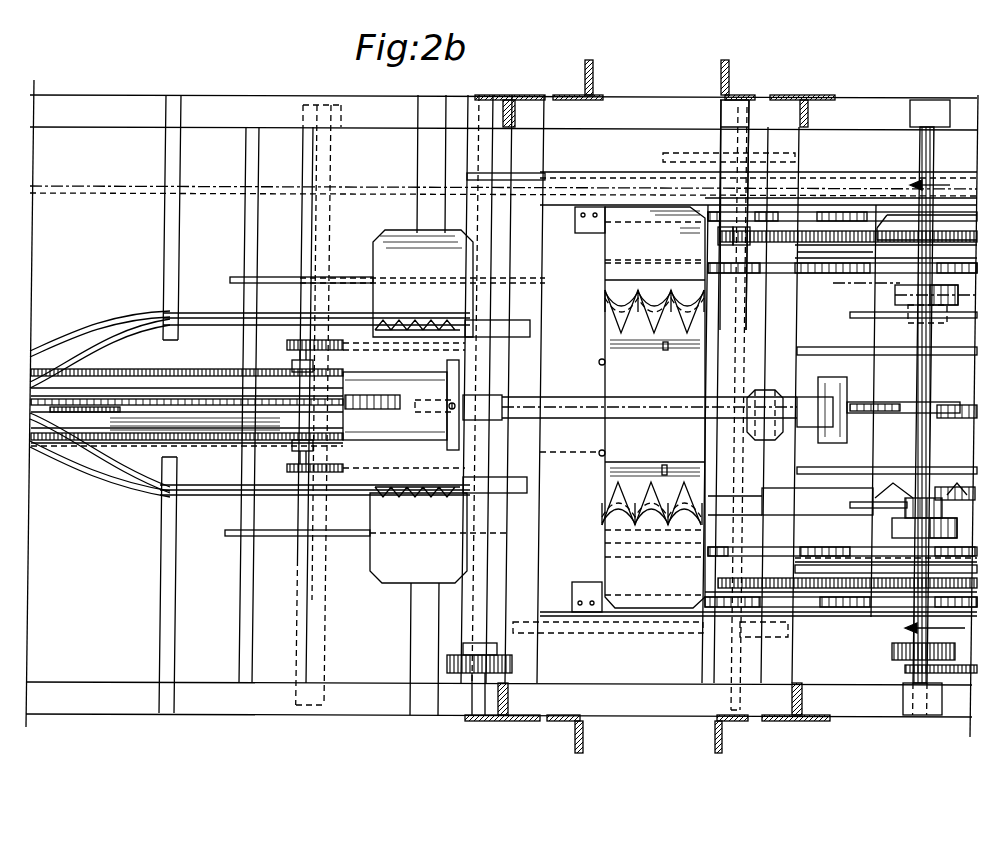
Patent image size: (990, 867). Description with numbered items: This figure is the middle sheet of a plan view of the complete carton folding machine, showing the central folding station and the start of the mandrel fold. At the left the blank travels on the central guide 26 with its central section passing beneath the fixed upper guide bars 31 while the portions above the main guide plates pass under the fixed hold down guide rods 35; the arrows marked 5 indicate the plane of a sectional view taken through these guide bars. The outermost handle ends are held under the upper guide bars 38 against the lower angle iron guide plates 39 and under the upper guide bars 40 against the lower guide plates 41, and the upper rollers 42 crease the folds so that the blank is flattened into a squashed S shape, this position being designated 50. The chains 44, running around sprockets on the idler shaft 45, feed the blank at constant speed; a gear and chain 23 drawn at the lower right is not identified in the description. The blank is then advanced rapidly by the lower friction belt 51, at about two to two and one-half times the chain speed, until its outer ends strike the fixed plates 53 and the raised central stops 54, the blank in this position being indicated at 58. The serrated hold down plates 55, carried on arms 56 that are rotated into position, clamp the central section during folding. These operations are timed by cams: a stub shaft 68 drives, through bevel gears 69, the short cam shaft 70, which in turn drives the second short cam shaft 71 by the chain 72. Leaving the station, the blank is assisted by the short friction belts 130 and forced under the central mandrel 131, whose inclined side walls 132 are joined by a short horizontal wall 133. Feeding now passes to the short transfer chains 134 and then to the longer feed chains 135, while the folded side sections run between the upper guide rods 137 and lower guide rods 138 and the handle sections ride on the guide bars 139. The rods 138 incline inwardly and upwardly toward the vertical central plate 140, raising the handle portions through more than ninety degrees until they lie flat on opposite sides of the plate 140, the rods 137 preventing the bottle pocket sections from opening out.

The section line arrows 5 is at (935, 407).
The gear and chain 23 is at (895, 670).
The central guide 26 is at (963, 405).
The fixed upper guide bars 31 is at (890, 355).
The fixed hold down guide rods 35 is at (855, 315).
The upper guide bars 38 is at (814, 208).
The lower angle iron guide plates 39 is at (880, 212).
The upper guide bars 40 is at (815, 565).
The lower guide plates 41 is at (782, 273).
The upper rollers 42 is at (895, 297).
The chains 44 is at (848, 231).
The idler shaft 45 is at (733, 660).
The blank position 50 is at (870, 284).
The lower friction belt 51 is at (807, 417).
The fixed plates 53 is at (580, 230).
The rods or stops 54 is at (599, 362).
The hold down plates 55 is at (628, 345).
The arms 56 is at (665, 350).
The blank position 58 is at (612, 280).
The stub shaft 68 is at (720, 140).
The bevel gears 69 is at (775, 390).
The short cam shaft 70 is at (530, 397).
The second short cam shaft 71 is at (617, 633).
The chain 72 is at (545, 452).
The short additional friction belts 130 is at (520, 322).
The central mandrel 131 is at (396, 385).
The inclined side walls 132 is at (265, 440).
The short horizontal wall 133 is at (357, 395).
The short transfer chains 134 is at (296, 363).
The longer feed chains 135 is at (160, 372).
The upper guide rods 137 is at (127, 333).
The lower guide rods 138 is at (80, 333).
The guide bars 139 is at (350, 277).
The vertical central plate 140 is at (172, 398).